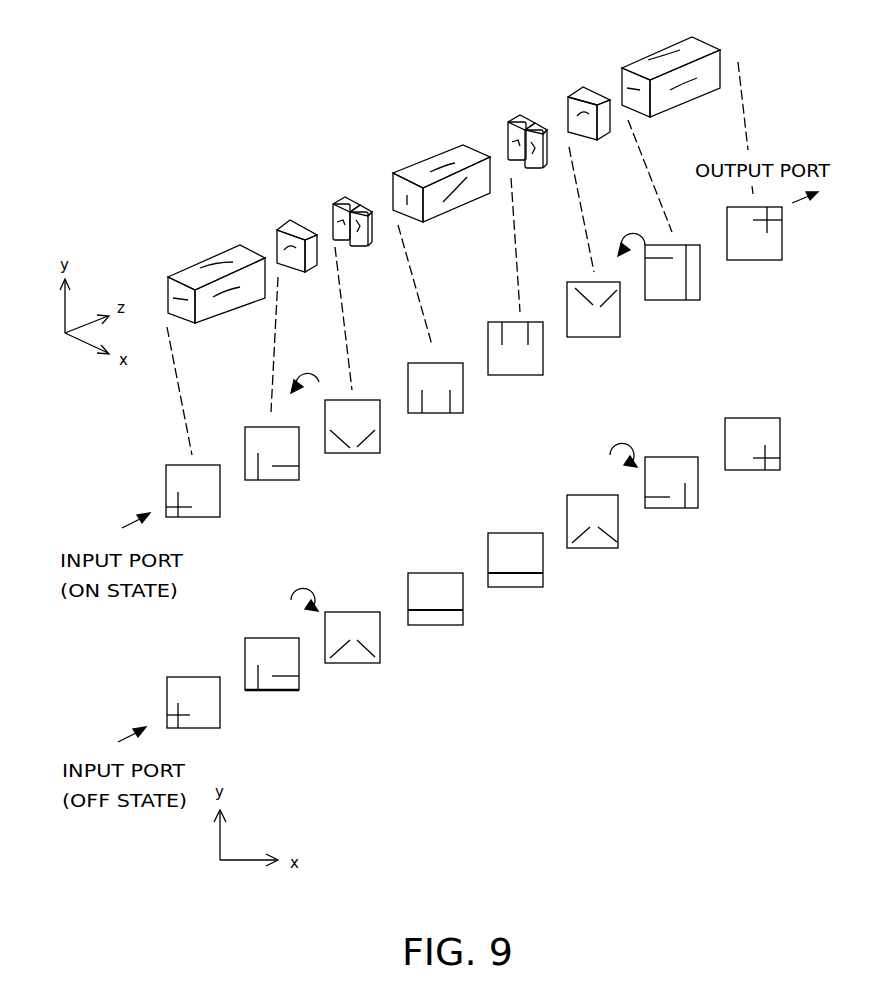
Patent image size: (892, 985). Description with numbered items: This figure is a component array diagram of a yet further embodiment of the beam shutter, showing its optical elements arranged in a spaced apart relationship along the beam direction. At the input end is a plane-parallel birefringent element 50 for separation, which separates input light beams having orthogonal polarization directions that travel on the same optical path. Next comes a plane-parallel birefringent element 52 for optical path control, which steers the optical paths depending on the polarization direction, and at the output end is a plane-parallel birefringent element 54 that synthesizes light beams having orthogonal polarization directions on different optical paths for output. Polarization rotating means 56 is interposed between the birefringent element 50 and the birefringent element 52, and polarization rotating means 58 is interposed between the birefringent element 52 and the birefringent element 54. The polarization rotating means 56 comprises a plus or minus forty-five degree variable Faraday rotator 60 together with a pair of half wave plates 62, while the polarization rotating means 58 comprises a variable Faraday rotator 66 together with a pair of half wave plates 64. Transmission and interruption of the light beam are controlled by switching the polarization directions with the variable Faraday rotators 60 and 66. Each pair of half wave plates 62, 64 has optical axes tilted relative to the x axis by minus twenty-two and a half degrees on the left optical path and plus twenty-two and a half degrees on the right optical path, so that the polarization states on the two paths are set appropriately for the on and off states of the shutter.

The plane-parallel birefringent element for separation 50 is at (213, 258).
The plane-parallel birefringent element for optical path control 52 is at (418, 163).
The plane-parallel birefringent element for synthesis 54 is at (675, 47).
The polarization rotating means 56 is at (355, 160).
The polarization rotating means 58 is at (592, 53).
The variable Faraday rotator 60 is at (297, 274).
The pair of ½ wave plates 62 is at (367, 246).
The pair of ½ wave plates 64 is at (542, 170).
The variable Faraday rotator 66 is at (599, 146).